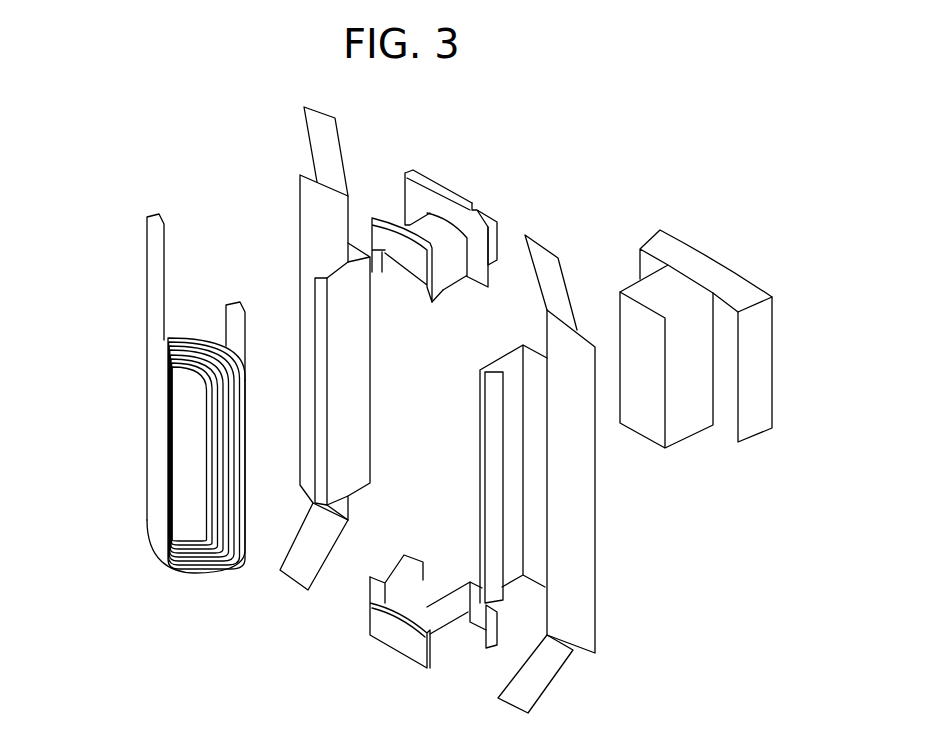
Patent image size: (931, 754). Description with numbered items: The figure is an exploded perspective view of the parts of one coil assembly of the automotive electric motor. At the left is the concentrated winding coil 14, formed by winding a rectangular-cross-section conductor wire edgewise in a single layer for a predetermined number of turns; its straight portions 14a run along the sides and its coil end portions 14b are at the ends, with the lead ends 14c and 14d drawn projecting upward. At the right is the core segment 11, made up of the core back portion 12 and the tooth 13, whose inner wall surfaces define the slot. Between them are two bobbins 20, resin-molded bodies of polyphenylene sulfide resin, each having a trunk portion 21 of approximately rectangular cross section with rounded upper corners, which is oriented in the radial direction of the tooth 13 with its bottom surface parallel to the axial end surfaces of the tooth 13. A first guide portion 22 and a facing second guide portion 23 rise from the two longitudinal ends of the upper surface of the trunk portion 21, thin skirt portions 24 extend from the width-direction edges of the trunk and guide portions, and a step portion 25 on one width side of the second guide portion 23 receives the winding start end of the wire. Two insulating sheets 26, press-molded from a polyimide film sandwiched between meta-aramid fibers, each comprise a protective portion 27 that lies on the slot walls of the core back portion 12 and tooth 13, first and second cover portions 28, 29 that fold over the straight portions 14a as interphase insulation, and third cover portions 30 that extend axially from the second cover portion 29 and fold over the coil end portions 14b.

The core segment 11 is at (696, 329).
The core back portion 12 is at (715, 267).
The tooth 13 is at (692, 405).
The concentrated winding coil 14 is at (158, 393).
The straight portion 14a is at (160, 440).
The coil end portion 14b is at (193, 350).
The coil lead 14c is at (233, 328).
The coil lead 14d is at (153, 261).
The bobbin 20 is at (434, 409).
The trunk portion 21 is at (431, 236).
The first guide portion 22 is at (380, 223).
The second guide portion 23 is at (473, 205).
The skirt portion 24 is at (440, 288).
The step portion 25 is at (483, 218).
The insulating sheet 26 is at (453, 407).
The protective portion 27 is at (357, 367).
The first cover portion 28 is at (326, 270).
The second cover portion 29 is at (310, 207).
The third cover portion 30 is at (313, 132).